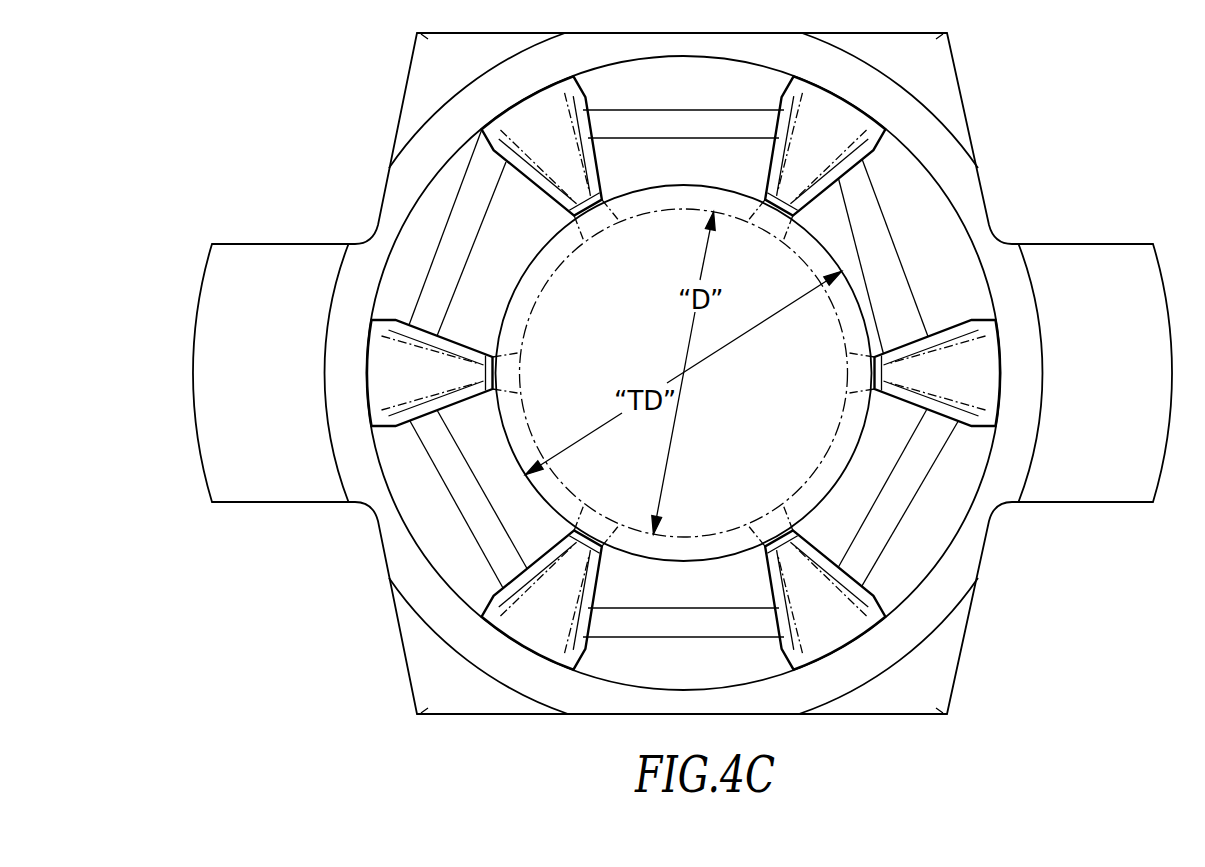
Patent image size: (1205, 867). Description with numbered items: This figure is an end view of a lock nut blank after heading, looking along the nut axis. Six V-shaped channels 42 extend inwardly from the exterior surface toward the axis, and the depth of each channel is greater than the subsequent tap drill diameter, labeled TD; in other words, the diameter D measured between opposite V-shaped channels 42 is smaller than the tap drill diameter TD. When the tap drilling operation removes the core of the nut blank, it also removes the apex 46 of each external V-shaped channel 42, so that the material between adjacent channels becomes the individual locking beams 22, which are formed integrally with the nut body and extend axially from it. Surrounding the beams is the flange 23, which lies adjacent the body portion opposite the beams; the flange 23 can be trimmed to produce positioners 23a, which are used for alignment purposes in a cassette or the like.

The locking beams 22 is at (943, 518).
The flange 23 is at (412, 635).
The positioners 23a is at (1094, 258).
The V-shaped channels 42 is at (583, 630).
The apex 46 is at (521, 344).